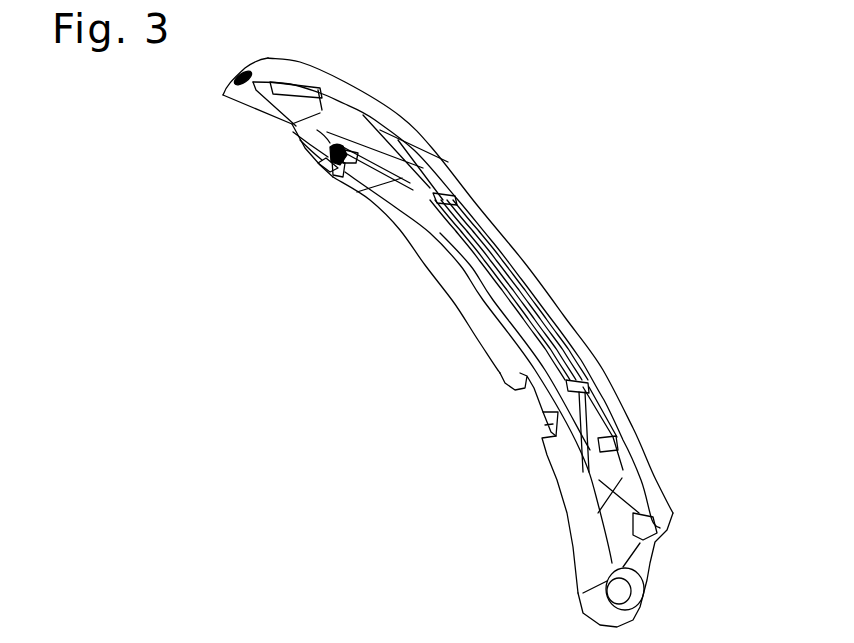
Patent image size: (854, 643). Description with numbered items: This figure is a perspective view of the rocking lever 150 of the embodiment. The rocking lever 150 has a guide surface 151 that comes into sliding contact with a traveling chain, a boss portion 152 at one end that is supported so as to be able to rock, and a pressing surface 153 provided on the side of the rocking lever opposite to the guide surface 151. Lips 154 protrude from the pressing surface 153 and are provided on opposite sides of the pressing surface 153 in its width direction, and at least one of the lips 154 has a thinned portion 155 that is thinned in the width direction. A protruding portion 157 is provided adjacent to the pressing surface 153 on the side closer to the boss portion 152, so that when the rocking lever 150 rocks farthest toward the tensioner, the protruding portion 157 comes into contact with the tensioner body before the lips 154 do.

The rocking lever 150 is at (568, 158).
The guide surface 151 is at (543, 280).
The boss portion 152 is at (650, 603).
The pressing surface 153 is at (323, 170).
The lips 154 is at (310, 157).
The thinned portion 155 is at (333, 177).
The protruding portion 157 is at (350, 183).